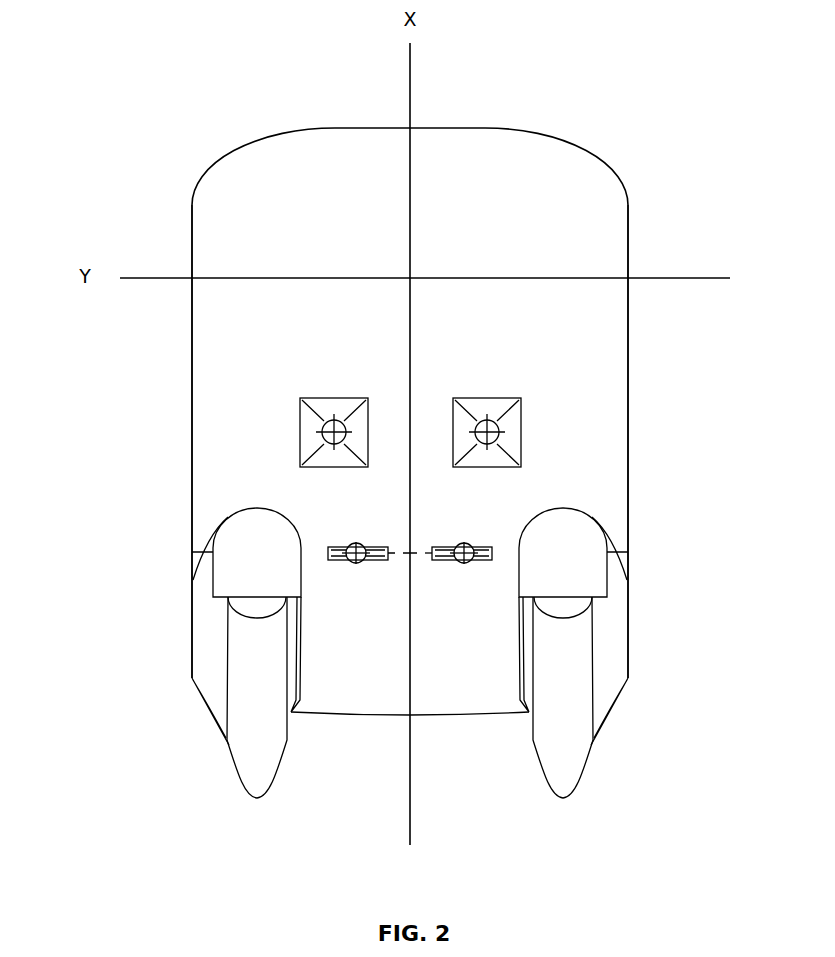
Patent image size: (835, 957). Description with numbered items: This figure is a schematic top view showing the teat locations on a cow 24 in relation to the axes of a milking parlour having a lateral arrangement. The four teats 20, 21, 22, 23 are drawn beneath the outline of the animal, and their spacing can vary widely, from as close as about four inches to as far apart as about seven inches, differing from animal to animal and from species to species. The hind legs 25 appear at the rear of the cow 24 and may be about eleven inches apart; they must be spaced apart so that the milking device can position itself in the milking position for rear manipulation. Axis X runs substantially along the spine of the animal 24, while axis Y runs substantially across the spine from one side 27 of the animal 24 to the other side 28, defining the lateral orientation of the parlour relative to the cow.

The teat 20 is at (306, 428).
The teat 21 is at (358, 544).
The teat 22 is at (464, 545).
The teat 23 is at (477, 425).
The cow 24 is at (578, 240).
The hind legs 25 is at (235, 708).
The side of animal 27 is at (637, 428).
The side of animal 28 is at (192, 333).